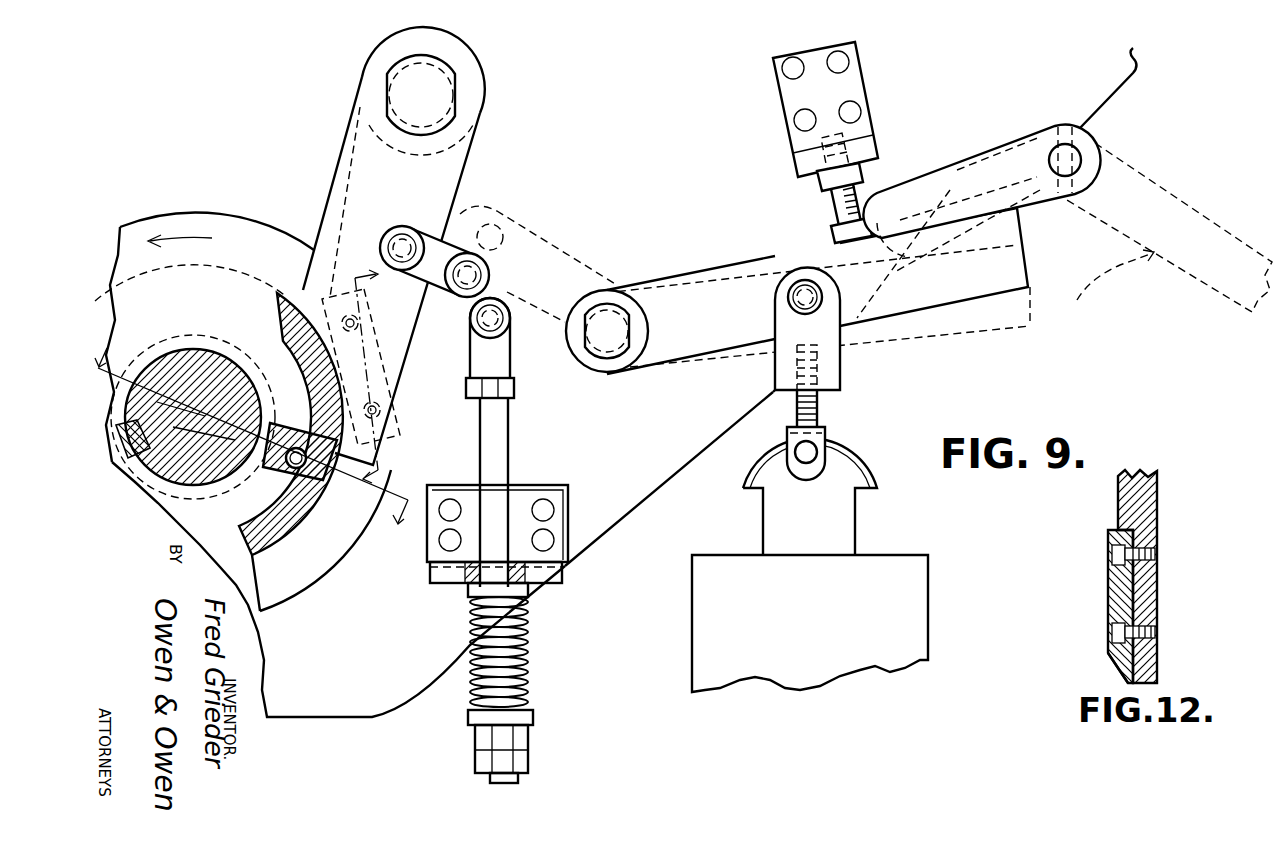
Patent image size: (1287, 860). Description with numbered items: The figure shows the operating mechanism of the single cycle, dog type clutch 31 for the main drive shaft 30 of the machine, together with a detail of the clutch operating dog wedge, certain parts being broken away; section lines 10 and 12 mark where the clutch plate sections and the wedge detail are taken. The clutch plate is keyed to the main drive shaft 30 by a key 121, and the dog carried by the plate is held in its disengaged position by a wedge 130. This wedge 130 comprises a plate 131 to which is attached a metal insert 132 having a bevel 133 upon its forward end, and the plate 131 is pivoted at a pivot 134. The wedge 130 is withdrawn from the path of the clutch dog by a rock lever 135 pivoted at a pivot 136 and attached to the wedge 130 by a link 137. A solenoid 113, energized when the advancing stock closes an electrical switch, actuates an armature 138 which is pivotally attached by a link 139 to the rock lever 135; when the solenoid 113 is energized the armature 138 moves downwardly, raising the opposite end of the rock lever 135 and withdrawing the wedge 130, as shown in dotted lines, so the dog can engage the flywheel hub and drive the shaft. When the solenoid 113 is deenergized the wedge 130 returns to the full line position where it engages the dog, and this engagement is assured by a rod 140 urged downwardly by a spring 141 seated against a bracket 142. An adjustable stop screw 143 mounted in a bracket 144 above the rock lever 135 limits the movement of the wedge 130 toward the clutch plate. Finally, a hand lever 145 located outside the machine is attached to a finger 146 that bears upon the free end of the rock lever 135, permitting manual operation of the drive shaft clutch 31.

In FIG. 9, the section line 10- 10 is at (251, 442).
In FIG. 9, the section line 12- 12 is at (387, 385).
In FIG. 9, the main drive shaft 30 is at (205, 362).
In FIG. 9, the clutch 31 is at (220, 212).
In FIG. 9, the solenoid 113 is at (915, 610).
In FIG. 9, the key 121 is at (133, 455).
In FIG. 9, the wedge 130 is at (333, 218).
In FIG. 12, the plate 131 is at (1158, 498).
In FIG. 12, the metal insert 132 is at (1110, 598).
In FIG. 12, the bevel 133 is at (1117, 667).
In FIG. 9, the pivot 134 is at (465, 96).
In FIG. 9, the rock lever 135 is at (722, 270).
In FIG. 9, the pivot of rock lever 136 is at (614, 290).
In FIG. 9, the link 137 is at (466, 214).
In FIG. 9, the armature 138 is at (847, 528).
In FIG. 9, the link 139 is at (827, 372).
In FIG. 9, the rod 140 is at (498, 442).
In FIG. 9, the spring 141 is at (530, 670).
In FIG. 9, the bracket 142 is at (557, 562).
In FIG. 9, the adjustable stop screw 143 is at (880, 205).
In FIG. 9, the bracket 144 is at (861, 88).
In FIG. 9, the hand lever 145 is at (1163, 180).
In FIG. 9, the finger 146 is at (962, 150).